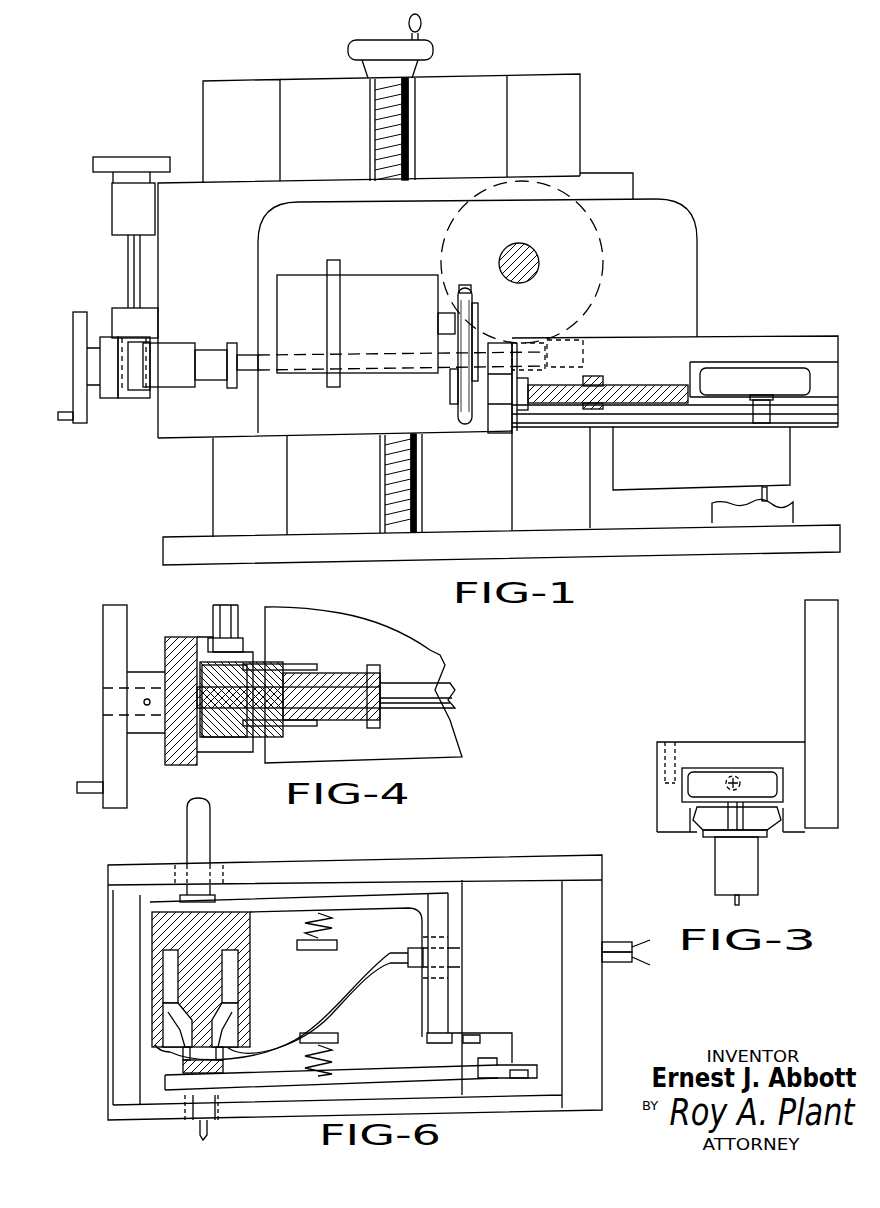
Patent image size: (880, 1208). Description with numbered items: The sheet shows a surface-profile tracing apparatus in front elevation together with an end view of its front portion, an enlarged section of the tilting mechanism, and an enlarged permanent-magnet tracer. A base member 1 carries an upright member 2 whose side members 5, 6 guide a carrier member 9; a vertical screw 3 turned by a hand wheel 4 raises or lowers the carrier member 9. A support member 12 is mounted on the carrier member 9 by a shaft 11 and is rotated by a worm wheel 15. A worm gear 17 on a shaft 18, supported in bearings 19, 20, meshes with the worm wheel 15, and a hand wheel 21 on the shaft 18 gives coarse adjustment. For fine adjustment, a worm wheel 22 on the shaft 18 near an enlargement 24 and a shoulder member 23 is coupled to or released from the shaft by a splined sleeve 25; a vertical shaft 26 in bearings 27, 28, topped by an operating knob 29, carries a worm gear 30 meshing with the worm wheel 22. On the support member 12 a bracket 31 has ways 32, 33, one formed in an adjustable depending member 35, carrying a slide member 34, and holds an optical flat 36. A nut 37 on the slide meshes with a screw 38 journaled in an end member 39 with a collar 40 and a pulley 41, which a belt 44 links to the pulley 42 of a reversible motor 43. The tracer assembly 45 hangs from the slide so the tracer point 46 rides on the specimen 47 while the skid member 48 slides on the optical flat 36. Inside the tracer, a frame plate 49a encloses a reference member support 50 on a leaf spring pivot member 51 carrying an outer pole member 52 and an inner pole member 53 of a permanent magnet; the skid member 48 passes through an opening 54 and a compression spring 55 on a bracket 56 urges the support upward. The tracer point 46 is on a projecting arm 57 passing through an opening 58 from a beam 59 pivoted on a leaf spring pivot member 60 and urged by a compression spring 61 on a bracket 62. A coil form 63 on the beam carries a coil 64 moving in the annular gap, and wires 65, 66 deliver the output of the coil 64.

In FIG. 1, the base member 1 is at (718, 545).
In FIG. 1, the upright member 2 is at (580, 100).
In FIG. 1, the vertical screw 3 is at (417, 105).
In FIG. 1, the hand wheel 4 is at (432, 42).
In FIG. 1, the side member 5 is at (243, 82).
In FIG. 1, the side member 6 is at (530, 80).
In FIG. 1, the carrier member 9 is at (614, 173).
In FIG. 1, the shaft 11 is at (535, 257).
In FIG. 1, the support member 12 is at (698, 242).
In FIG. 4, the support member 12 is at (365, 640).
In FIG. 3, the support member 12 is at (813, 643).
In FIG. 1, the worm wheel 15 is at (565, 190).
In FIG. 1, the worm gear 17 is at (522, 340).
In FIG. 1, the shaft 18 is at (248, 358).
In FIG. 4, the shaft 18 is at (440, 683).
In FIG. 1, the bearing 19 is at (583, 340).
In FIG. 1, the bearing 20 is at (103, 335).
In FIG. 4, the bearing 20 is at (175, 640).
In FIG. 1, the hand wheel 21 is at (62, 323).
In FIG. 4, the hand wheel 21 is at (103, 622).
In FIG. 1, the worm wheel 22 is at (143, 400).
In FIG. 4, the worm wheel 22 is at (235, 745).
In FIG. 4, the shoulder member 23 is at (385, 668).
In FIG. 4, the enlargement 24 is at (315, 680).
In FIG. 1, the sleeve 25 is at (167, 347).
In FIG. 4, the sleeve 25 is at (270, 670).
In FIG. 1, the vertical shaft 26 is at (133, 252).
In FIG. 4, the vertical shaft 26 is at (213, 620).
In FIG. 1, the bearing 27 is at (118, 313).
In FIG. 1, the bearing 28 is at (112, 210).
In FIG. 1, the operating knob 29 is at (103, 157).
In FIG. 4, the worm gear 30 is at (250, 650).
In FIG. 1, the bracket 31 is at (705, 336).
In FIG. 3, the bracket 31 is at (737, 745).
In FIG. 3, the way 32 is at (690, 830).
In FIG. 3, the way 33 is at (780, 832).
In FIG. 3, the slide member 34 is at (765, 817).
In FIG. 3, the depending member 35 is at (660, 800).
In FIG. 1, the optical flat 36 is at (800, 368).
In FIG. 3, the optical flat 36 is at (710, 778).
In FIG. 1, the nut 37 is at (600, 372).
In FIG. 1, the screw 38 is at (620, 380).
In FIG. 3, the screw 38 is at (740, 776).
In FIG. 1, the end member 39 is at (500, 433).
In FIG. 1, the collar 40 is at (522, 430).
In FIG. 1, the pulley 41 is at (452, 405).
In FIG. 1, the pulley 42 is at (478, 315).
In FIG. 1, the reversible motor 43 is at (357, 280).
In FIG. 1, the belt 44 is at (460, 290).
In FIG. 1, the tracer assembly 45 is at (790, 452).
In FIG. 3, the tracer assembly 45 is at (758, 870).
In FIG. 6, the tracer assembly 45 is at (437, 857).
In FIG. 1, the tracer point 46 is at (770, 495).
In FIG. 3, the tracer point 46 is at (740, 905).
In FIG. 6, the tracer point 46 is at (205, 1137).
In FIG. 1, the specimen 47 is at (793, 513).
In FIG. 1, the skid member 48 is at (760, 395).
In FIG. 6, the skid member 48 is at (187, 808).
In FIG. 6, the cover plate 49a is at (492, 870).
In FIG. 6, the reference member support 50 is at (365, 905).
In FIG. 6, the leaf spring pivot member 51 is at (455, 1035).
In FIG. 6, the outer pole member 52 is at (250, 960).
In FIG. 6, the inner pole member 53 is at (240, 927).
In FIG. 6, the opening 54 is at (215, 870).
In FIG. 6, the compression spring 55 is at (335, 926).
In FIG. 6, the bracket 56 is at (337, 948).
In FIG. 6, the projecting arm 57 is at (195, 1127).
In FIG. 6, the opening 58 is at (215, 1127).
In FIG. 6, the beam 59 is at (432, 1072).
In FIG. 6, the leaf spring pivot member 60 is at (505, 1063).
In FIG. 6, the compression spring 61 is at (333, 1057).
In FIG. 6, the bracket 62 is at (338, 1035).
In FIG. 6, the coil form 63 is at (183, 1063).
In FIG. 6, the coil 64 is at (160, 1048).
In FIG. 6, the wire 65 is at (305, 1015).
In FIG. 6, the wire 66 is at (340, 992).